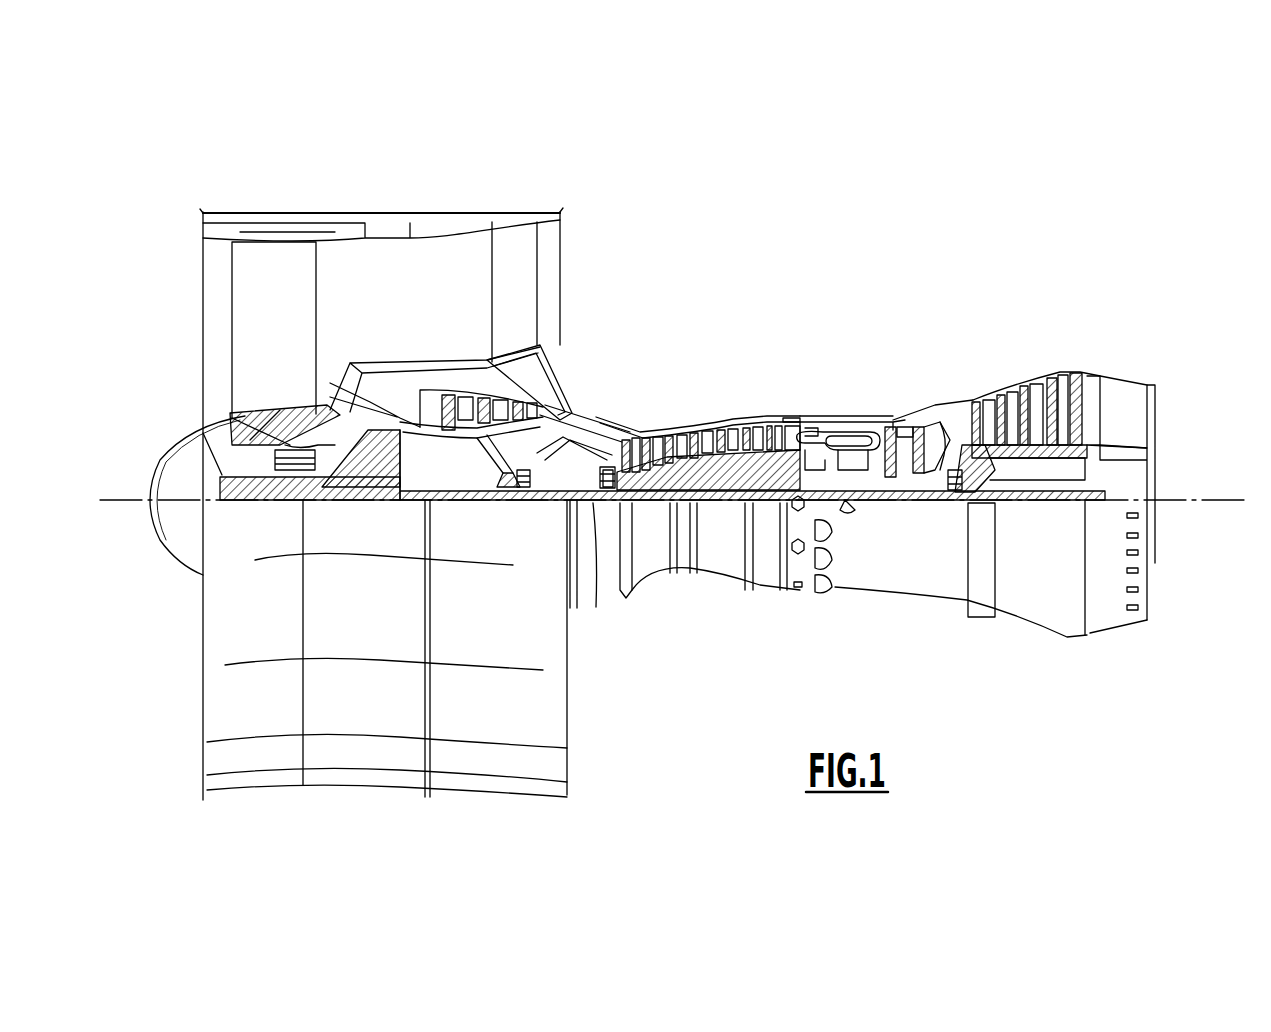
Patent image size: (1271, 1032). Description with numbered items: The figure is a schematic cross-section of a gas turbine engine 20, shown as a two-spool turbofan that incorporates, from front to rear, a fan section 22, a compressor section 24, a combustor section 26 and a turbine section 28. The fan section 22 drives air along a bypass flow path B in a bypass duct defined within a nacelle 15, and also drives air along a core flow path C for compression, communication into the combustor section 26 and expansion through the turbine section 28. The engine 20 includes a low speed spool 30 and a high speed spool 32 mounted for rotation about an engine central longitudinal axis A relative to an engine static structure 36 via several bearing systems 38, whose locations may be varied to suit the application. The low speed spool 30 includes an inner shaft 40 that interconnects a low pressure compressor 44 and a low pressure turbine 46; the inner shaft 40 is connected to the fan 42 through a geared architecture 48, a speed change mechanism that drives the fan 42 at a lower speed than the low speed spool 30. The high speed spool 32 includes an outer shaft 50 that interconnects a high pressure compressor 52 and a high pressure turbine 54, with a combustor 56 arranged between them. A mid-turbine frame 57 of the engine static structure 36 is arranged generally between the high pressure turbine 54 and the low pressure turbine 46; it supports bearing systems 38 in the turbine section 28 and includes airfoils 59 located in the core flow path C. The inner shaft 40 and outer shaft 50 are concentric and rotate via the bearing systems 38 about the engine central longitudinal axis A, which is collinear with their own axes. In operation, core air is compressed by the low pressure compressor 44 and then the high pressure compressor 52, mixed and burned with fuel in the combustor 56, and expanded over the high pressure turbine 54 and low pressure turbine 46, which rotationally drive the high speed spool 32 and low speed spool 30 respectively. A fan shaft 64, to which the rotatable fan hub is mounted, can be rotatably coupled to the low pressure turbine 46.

The nacelle 15 is at (386, 222).
The gas turbine engine 20 is at (843, 268).
The fan section 22 is at (316, 208).
The compressor section 24 is at (612, 412).
The combustor section 26 is at (838, 400).
The turbine section 28 is at (985, 362).
The low speed spool 30 is at (723, 512).
The high speed spool 32 is at (770, 440).
The engine static structure 36 is at (766, 600).
The bearing systems 38 is at (520, 492).
The inner shaft 40 is at (592, 515).
The fan 42 is at (286, 348).
The low pressure compressor 44 is at (465, 430).
The low pressure turbine 46 is at (1032, 392).
The geared architecture 48 is at (388, 488).
The outer shaft 50 is at (853, 499).
The high pressure compressor 52 is at (700, 475).
The high pressure turbine 54 is at (903, 428).
The combustor 56 is at (840, 445).
The mid-turbine frame 57 is at (952, 425).
The airfoils 59 is at (975, 465).
The fan shaft 64 is at (207, 440).
The engine central longitudinal axis A is at (1238, 500).
The bypass flow path B is at (342, 293).
The core flow path C is at (390, 400).